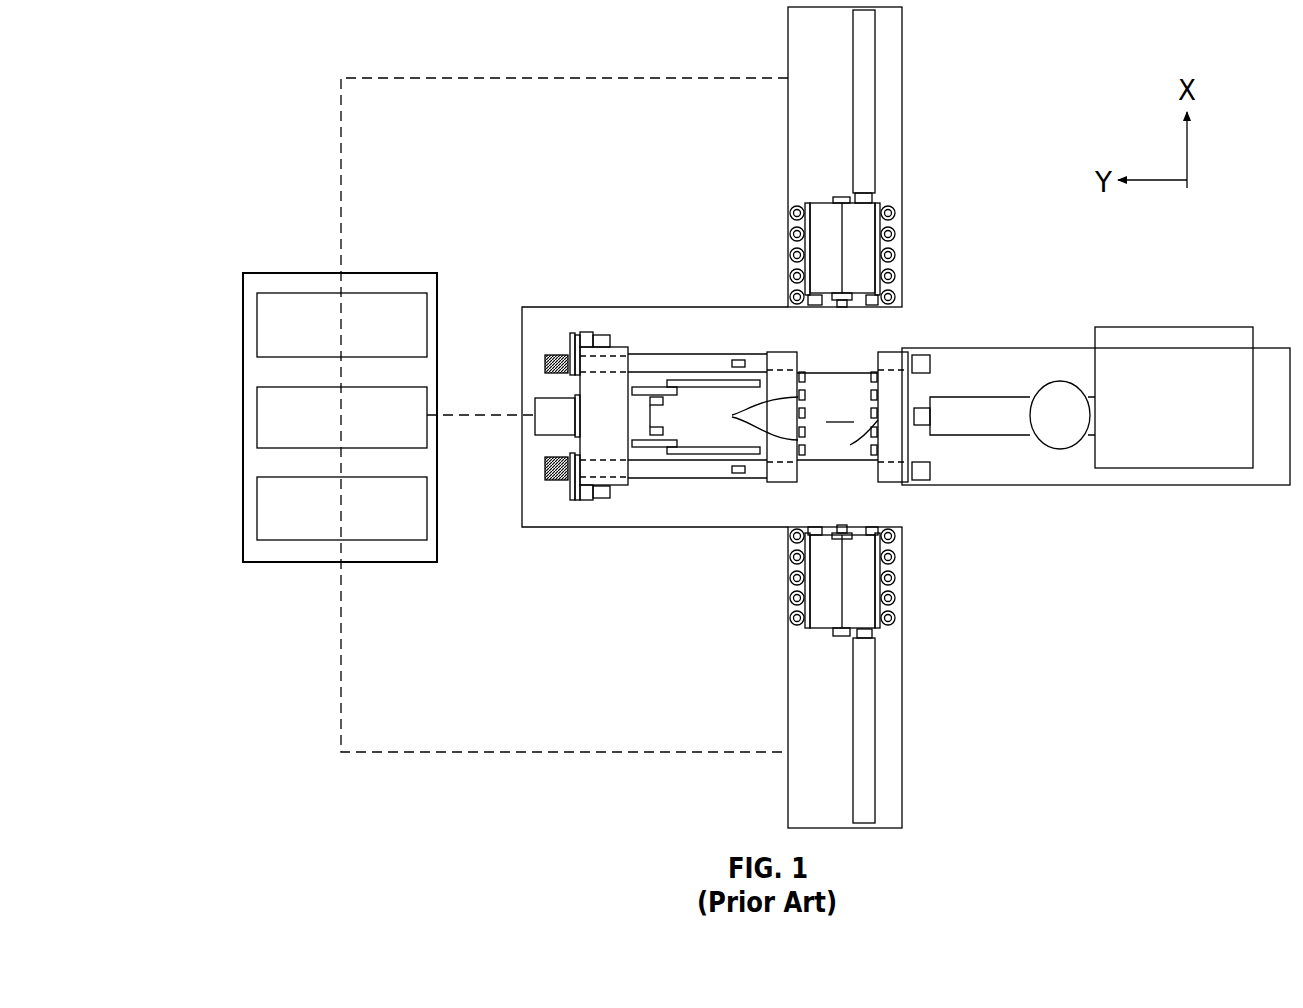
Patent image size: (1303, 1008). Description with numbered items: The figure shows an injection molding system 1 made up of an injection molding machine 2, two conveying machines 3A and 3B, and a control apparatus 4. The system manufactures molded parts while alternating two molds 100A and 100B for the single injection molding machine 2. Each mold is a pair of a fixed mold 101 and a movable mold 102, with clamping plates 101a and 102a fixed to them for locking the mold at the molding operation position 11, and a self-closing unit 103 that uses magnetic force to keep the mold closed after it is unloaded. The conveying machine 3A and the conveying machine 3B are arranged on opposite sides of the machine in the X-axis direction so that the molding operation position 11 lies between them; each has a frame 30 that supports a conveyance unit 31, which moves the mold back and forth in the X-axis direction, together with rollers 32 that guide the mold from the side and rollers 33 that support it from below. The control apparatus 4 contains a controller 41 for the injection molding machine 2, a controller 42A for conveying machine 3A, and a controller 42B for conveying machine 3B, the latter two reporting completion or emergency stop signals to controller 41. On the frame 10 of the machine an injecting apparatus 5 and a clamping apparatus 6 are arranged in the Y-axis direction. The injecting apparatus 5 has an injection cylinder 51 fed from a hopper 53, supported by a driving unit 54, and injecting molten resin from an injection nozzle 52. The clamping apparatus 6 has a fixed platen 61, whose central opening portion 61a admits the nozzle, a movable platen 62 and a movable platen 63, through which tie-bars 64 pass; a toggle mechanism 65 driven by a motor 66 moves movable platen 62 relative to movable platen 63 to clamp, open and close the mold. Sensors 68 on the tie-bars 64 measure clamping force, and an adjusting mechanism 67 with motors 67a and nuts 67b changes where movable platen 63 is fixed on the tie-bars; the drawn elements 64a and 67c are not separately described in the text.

The injection molding system 1 is at (1032, 657).
The injection molding machine 2 is at (1068, 542).
The conveying machine 3A is at (912, 748).
The conveying machine 3B is at (914, 111).
The control apparatus 4 is at (418, 253).
The injecting apparatus 5 is at (1183, 310).
The clamping apparatus 6 is at (661, 299).
The frame 10 is at (978, 348).
The molding operation position 11 is at (785, 418).
The frame 30 is at (808, 86).
The conveyance unit 31 is at (866, 78).
The rollers 32 is at (790, 210).
The rollers 33 is at (810, 306).
The controller 41 is at (257, 418).
The controller 42A is at (320, 542).
The controller 42B is at (286, 293).
The injection cylinder 51 is at (1020, 395).
The injection nozzle 52 is at (929, 418).
The hopper 53 is at (1062, 448).
The driving unit 54 is at (1130, 327).
The fixed platen 61 is at (929, 478).
The opening portion 61a is at (883, 437).
The movable platen 62 is at (766, 361).
The movable platen 63 is at (580, 388).
The tie-bars 64 is at (713, 362).
The threaded portions 64a is at (546, 362).
The toggle mechanism 65 is at (651, 369).
The motor 66 is at (535, 420).
The adjusting mechanism 67 is at (546, 445).
The motors 67a is at (598, 332).
The nuts 67b is at (571, 336).
The spring washer 67c is at (571, 333).
The sensors 68 is at (735, 360).
The mold 100A is at (884, 638).
The mold 100B is at (880, 194).
The fixed mold 101 is at (863, 280).
The clamping plate 101a is at (882, 245).
The movable mold 102 is at (816, 277).
The clamping plate 102a is at (804, 238).
The self-closing unit 103 is at (845, 196).